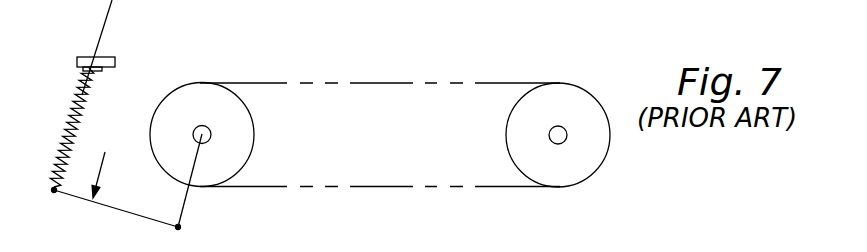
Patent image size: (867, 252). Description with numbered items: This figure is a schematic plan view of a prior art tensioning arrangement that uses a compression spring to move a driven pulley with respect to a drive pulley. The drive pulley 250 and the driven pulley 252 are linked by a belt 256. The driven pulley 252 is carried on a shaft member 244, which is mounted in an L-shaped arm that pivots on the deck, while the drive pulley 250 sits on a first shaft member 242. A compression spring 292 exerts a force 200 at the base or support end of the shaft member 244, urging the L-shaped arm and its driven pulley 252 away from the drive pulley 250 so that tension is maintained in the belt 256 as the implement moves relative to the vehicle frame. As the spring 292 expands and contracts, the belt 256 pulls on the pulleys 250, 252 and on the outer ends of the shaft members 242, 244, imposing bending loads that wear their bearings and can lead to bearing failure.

The spring 292 is at (78, 98).
The force 200 is at (107, 168).
The shaft member 244 is at (212, 132).
The driven pulley 252 is at (250, 160).
The drive pulley 250 is at (508, 118).
The first shaft member 242 is at (563, 140).
The belt 256 is at (373, 185).